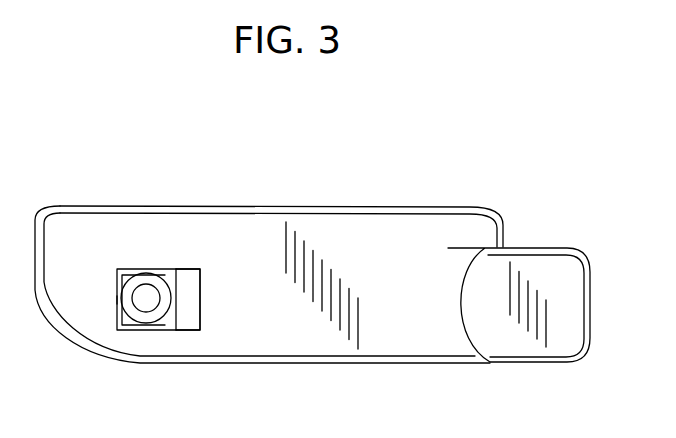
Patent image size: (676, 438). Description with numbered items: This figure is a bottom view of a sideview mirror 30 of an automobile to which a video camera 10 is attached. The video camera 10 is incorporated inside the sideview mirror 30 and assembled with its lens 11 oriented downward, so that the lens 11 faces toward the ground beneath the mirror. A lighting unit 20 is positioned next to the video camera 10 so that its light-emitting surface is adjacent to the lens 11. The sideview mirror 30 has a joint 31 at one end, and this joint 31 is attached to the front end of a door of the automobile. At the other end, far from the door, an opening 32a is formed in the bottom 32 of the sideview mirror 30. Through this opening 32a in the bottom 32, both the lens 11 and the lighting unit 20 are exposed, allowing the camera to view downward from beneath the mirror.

The video camera 10 is at (160, 269).
The lens 11 is at (142, 292).
The lighting unit 20 is at (193, 302).
The sideview mirror 30 is at (320, 208).
The joint 31 is at (556, 272).
The bottom 32 is at (413, 228).
The opening 32a is at (118, 300).